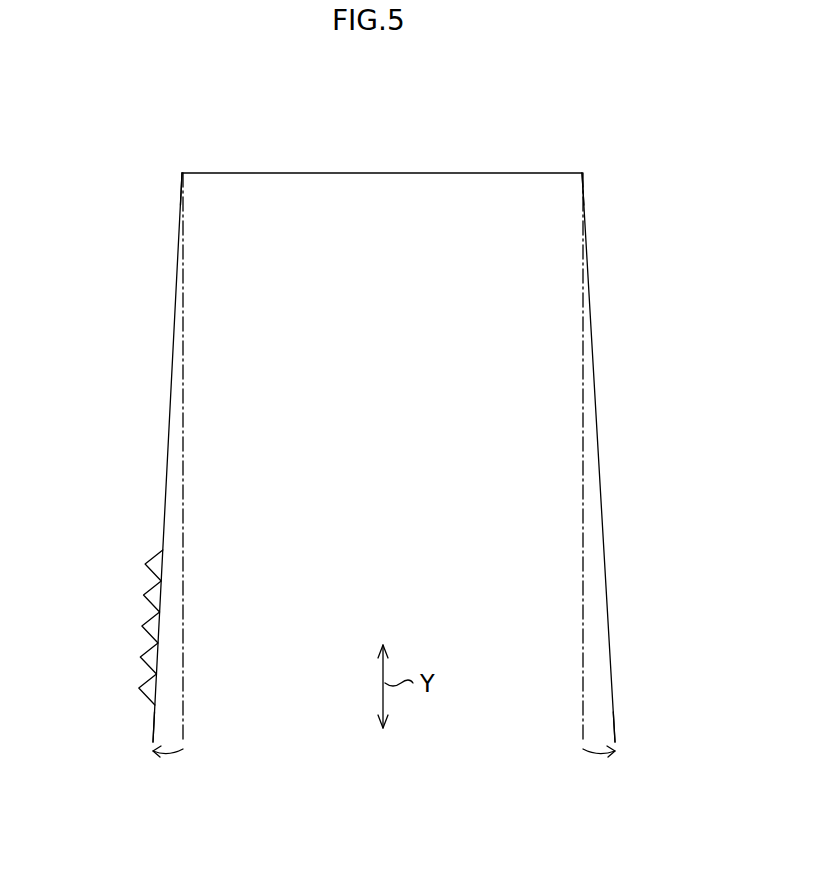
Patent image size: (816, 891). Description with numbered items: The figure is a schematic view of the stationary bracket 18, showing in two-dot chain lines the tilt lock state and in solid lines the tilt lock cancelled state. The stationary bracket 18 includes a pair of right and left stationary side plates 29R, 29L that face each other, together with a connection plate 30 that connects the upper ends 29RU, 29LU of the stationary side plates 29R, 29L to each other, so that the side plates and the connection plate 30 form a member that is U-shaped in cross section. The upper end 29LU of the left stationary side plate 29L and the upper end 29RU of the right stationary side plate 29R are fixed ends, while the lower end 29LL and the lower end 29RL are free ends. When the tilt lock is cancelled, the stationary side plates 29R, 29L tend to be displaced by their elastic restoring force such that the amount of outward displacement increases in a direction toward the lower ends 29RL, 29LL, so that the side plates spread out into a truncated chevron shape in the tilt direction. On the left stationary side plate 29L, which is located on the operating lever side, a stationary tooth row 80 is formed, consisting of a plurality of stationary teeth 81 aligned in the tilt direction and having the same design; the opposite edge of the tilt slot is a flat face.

The stationary bracket 18 is at (523, 162).
The connection plate 30 is at (383, 172).
The left stationary side plate 29L is at (167, 455).
The right stationary side plate 29R is at (599, 457).
The upper end of left stationary side plate 29LU is at (181, 190).
The upper end of right stationary side plate 29RU is at (583, 192).
The lower end of left stationary side plate 29LL is at (150, 720).
The lower end of right stationary side plate 29RL is at (617, 722).
The stationary tooth row 80 is at (112, 631).
The stationary teeth 81 is at (143, 560).